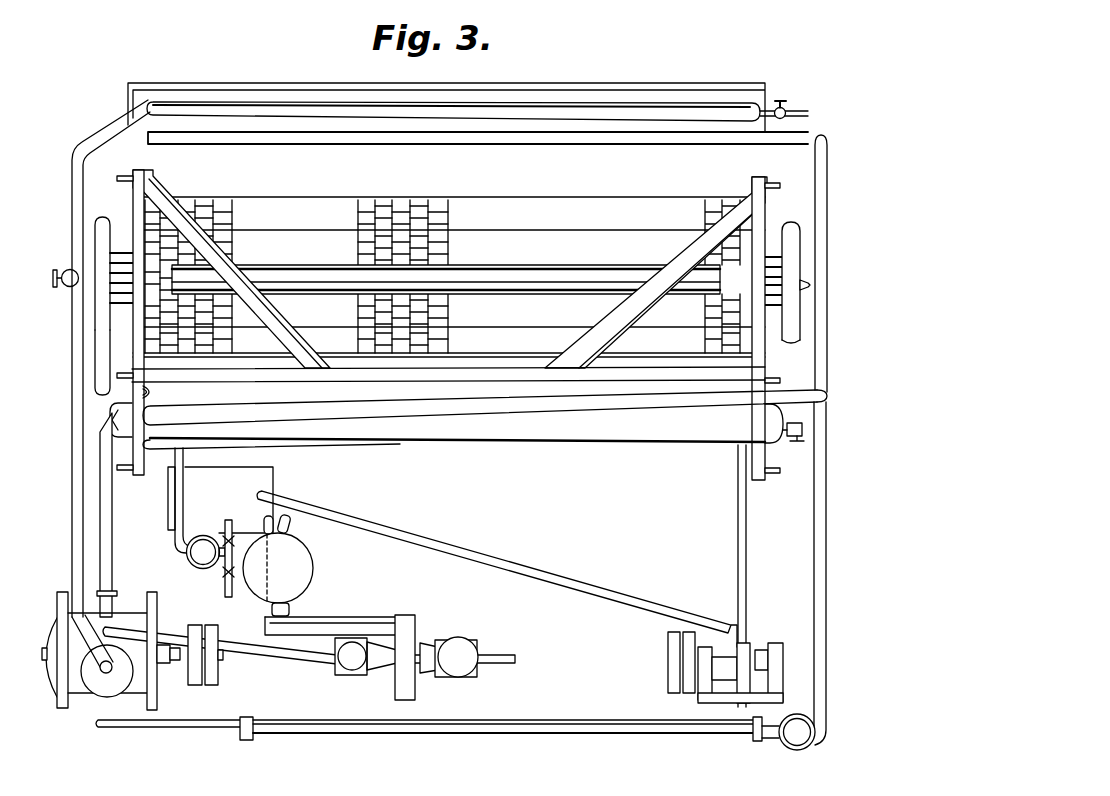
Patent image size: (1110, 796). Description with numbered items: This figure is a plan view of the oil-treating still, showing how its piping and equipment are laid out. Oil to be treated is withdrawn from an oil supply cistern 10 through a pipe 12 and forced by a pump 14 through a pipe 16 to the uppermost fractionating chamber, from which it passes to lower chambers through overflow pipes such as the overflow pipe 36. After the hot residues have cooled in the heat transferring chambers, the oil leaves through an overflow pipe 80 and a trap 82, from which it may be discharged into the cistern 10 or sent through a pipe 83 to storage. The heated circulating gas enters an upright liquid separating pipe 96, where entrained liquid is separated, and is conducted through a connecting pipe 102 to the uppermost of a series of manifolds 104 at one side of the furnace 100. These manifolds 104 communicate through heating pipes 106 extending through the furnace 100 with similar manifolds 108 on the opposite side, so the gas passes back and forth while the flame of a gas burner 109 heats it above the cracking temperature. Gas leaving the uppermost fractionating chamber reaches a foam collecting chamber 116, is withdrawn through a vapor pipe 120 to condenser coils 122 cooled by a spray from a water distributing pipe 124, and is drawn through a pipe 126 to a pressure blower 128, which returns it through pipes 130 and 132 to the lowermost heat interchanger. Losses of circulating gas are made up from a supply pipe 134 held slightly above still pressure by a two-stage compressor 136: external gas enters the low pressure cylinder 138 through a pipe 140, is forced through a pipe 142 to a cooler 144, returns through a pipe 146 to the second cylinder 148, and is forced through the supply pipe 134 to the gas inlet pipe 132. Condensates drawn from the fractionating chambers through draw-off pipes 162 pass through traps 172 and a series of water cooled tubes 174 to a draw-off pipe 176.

The oil supply cistern 10 is at (275, 478).
The pipe 12 is at (570, 580).
The pump 14 is at (773, 644).
The pipe 16 is at (747, 557).
The overflow pipe 36 is at (203, 446).
The overflow pipe 80 is at (177, 517).
The trap 82 is at (193, 561).
The pipe 83 is at (225, 580).
The liquid separating pipe 96 is at (153, 392).
The furnace 100 is at (338, 210).
The connecting pipe 102 is at (104, 360).
The manifolds 104 is at (100, 240).
The heating pipes 106 is at (125, 268).
The manifolds 108 is at (788, 249).
The gas burner 109 is at (88, 283).
The foam collecting chamber 116 is at (560, 443).
The vapor pipe 120 is at (723, 143).
The coils 122 is at (640, 122).
The water distributing pipe 124 is at (796, 110).
The pipe 126 is at (75, 465).
The pressure blower 128 is at (81, 695).
The pipe 130 is at (117, 603).
The gas inlet pipe 132 is at (112, 500).
The supply pipe 134 is at (271, 652).
The two-stage compressor 136 is at (394, 700).
The low pressure cylinder 138 is at (455, 673).
The pipe 140 is at (512, 655).
The pipe 142 is at (372, 617).
The cooler 144 is at (306, 558).
The pipe 146 is at (317, 633).
The second cylinder 148 is at (350, 667).
The draw-off pipes 162 is at (817, 517).
The traps 172 is at (798, 748).
The water cooled tubes 174 is at (550, 724).
The draw-off pipe 176 is at (182, 727).